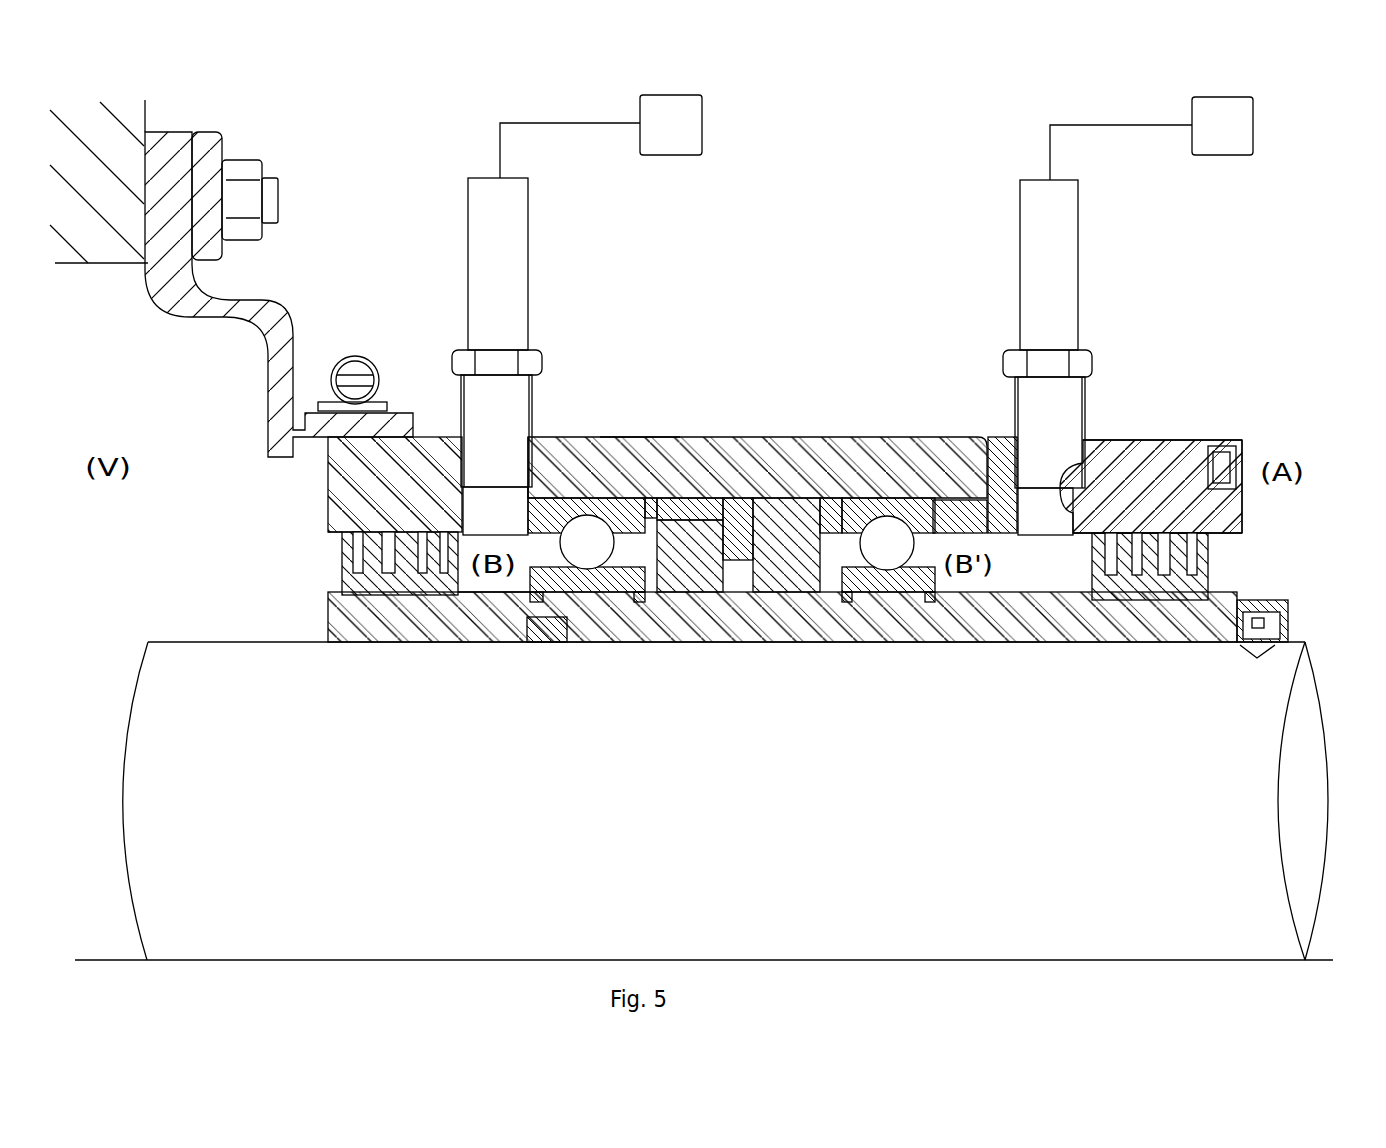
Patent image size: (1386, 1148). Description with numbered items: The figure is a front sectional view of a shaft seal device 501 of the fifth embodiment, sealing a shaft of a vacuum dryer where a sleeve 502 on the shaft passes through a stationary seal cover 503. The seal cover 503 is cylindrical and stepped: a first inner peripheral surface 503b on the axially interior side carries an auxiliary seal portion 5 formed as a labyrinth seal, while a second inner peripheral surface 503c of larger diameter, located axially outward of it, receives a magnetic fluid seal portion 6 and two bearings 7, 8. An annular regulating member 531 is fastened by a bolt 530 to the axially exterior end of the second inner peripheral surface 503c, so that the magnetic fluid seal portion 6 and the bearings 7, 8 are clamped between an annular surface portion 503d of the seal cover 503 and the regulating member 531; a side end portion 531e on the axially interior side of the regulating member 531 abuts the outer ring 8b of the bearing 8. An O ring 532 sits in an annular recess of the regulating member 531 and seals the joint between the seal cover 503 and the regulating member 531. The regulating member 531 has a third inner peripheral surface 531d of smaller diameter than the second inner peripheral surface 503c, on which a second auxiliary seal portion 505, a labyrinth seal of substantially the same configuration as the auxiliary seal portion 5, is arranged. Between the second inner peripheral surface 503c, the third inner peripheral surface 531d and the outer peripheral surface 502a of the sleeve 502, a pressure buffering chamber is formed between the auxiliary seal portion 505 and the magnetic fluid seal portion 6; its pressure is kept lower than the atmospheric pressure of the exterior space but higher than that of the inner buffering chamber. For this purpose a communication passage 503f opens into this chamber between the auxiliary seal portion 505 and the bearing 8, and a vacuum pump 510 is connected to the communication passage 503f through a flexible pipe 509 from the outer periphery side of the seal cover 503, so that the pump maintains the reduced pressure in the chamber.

The auxiliary seal portion 5 is at (334, 558).
The magnetic fluid seal portion 6 is at (827, 590).
The bearing 7 is at (592, 606).
The bearing 8 is at (893, 606).
The outer ring 8b is at (888, 497).
The shaft seal device 501 is at (1173, 364).
The sleeve 502 is at (317, 612).
The outer peripheral surface 502a is at (493, 583).
The seal cover 503 is at (318, 509).
The first inner peripheral surface 503b is at (326, 547).
The second inner peripheral surface 503c is at (637, 438).
The annular surface portion 503d is at (549, 438).
The communication passage 503f is at (1098, 440).
The auxiliary seal portion 505 is at (1224, 571).
The flexible pipe 509 is at (1068, 232).
The vacuum pump 510 is at (1247, 128).
The bolt 530 is at (1236, 442).
The regulating member 531 is at (1180, 440).
The third inner peripheral surface 531d is at (1248, 535).
The side end portion 531e is at (935, 534).
The O ring 532 is at (965, 440).